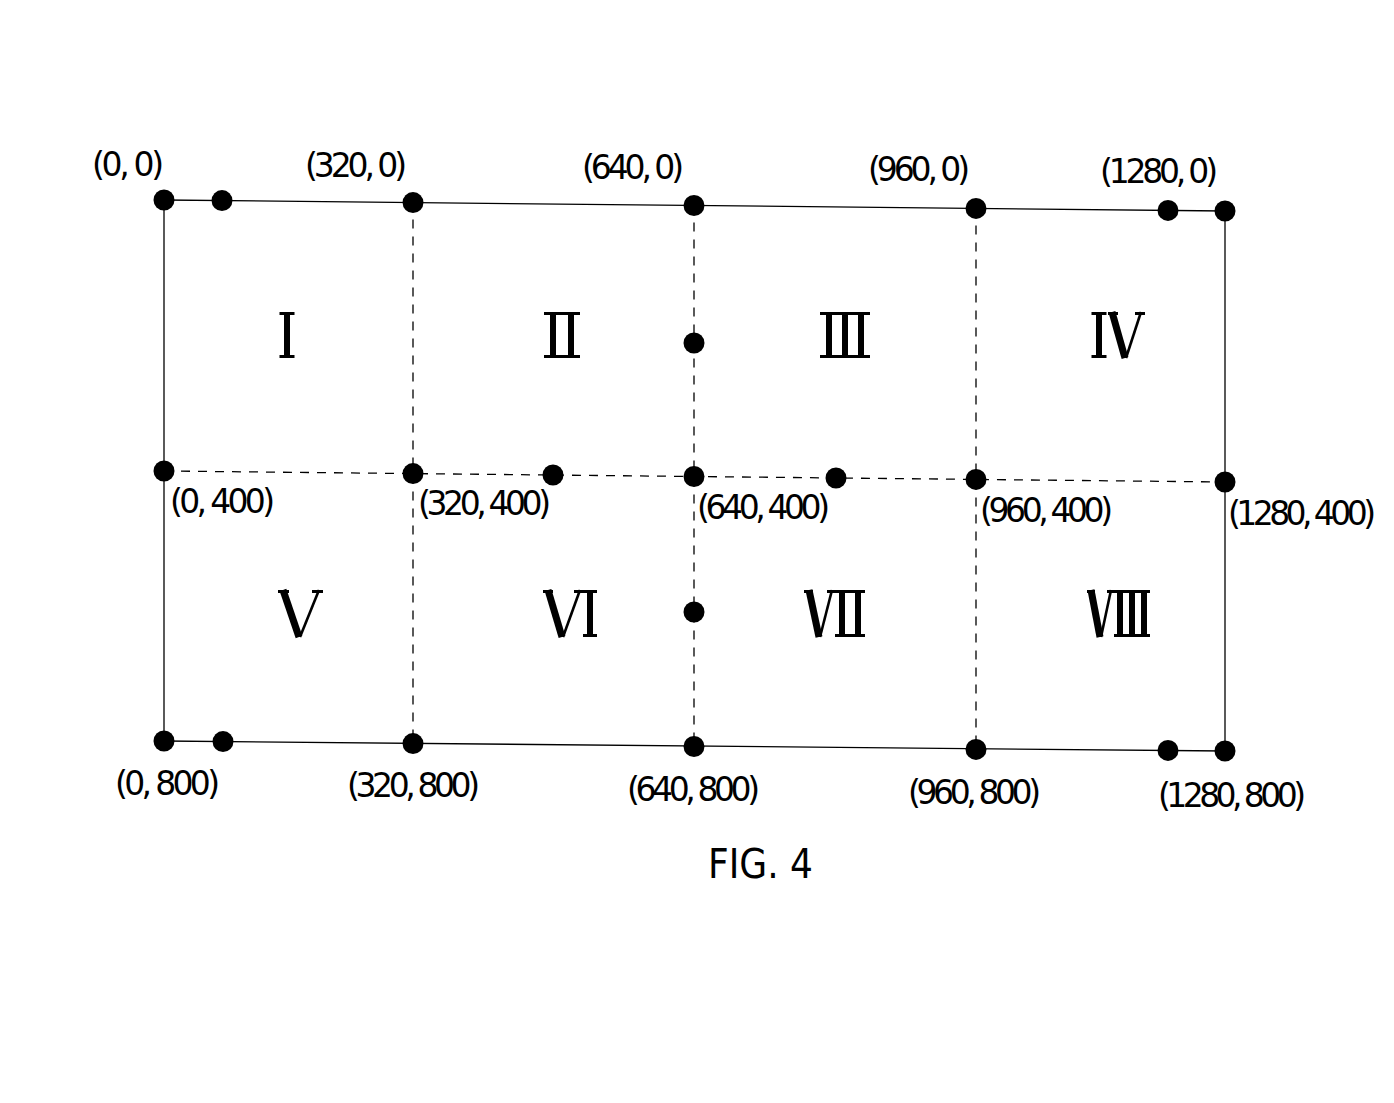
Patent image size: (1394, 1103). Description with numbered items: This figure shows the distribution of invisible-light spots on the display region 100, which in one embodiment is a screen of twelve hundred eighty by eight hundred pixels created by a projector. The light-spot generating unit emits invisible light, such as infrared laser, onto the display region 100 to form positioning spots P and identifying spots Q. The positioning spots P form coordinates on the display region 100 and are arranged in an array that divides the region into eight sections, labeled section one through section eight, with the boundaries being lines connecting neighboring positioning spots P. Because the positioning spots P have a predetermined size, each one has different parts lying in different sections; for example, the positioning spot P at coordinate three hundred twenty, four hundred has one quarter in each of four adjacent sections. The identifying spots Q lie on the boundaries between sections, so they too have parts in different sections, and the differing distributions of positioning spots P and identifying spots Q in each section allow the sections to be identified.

The display region 100 is at (1195, 295).
The positioning spots P is at (698, 416).
The identifying spots Q is at (695, 475).